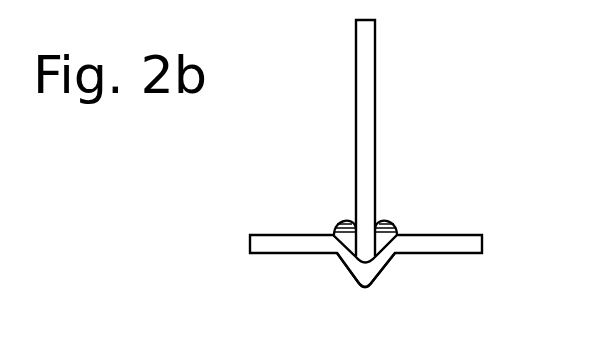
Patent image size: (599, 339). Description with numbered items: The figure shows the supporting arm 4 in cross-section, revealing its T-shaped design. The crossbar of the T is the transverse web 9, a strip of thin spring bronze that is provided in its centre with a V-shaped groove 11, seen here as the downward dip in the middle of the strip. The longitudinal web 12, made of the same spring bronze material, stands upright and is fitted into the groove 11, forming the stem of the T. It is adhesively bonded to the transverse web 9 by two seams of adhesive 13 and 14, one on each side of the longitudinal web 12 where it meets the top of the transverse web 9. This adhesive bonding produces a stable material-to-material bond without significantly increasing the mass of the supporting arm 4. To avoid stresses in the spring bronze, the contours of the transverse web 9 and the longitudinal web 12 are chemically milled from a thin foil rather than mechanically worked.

The supporting arm 4 is at (476, 99).
The transverse web 9 is at (469, 243).
The V-shaped groove 11 is at (387, 267).
The longitudinal web 12 is at (356, 78).
The seam of adhesive 13 is at (338, 223).
The seam of adhesive 14 is at (398, 221).